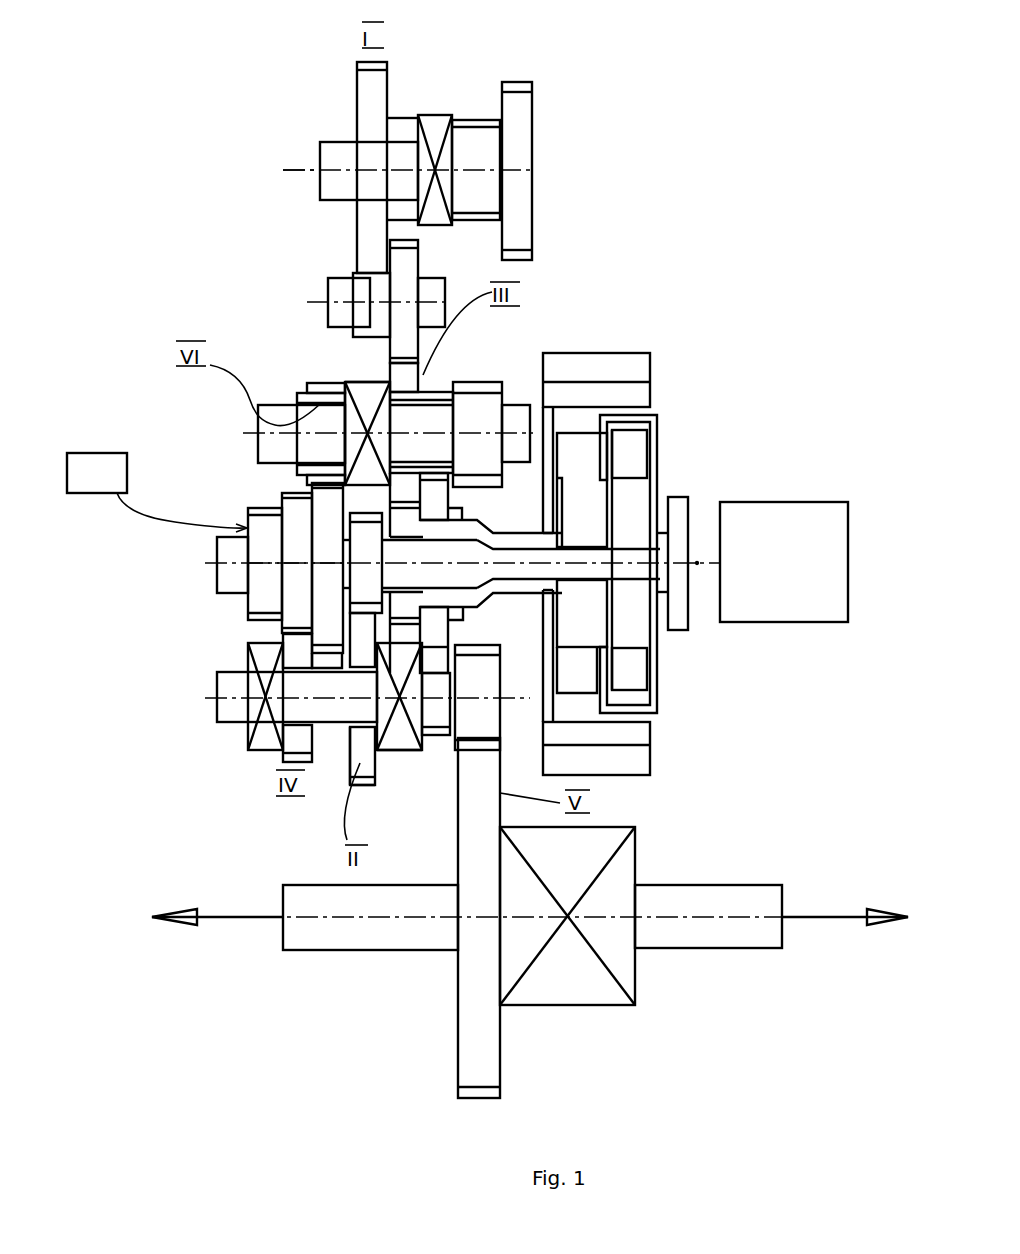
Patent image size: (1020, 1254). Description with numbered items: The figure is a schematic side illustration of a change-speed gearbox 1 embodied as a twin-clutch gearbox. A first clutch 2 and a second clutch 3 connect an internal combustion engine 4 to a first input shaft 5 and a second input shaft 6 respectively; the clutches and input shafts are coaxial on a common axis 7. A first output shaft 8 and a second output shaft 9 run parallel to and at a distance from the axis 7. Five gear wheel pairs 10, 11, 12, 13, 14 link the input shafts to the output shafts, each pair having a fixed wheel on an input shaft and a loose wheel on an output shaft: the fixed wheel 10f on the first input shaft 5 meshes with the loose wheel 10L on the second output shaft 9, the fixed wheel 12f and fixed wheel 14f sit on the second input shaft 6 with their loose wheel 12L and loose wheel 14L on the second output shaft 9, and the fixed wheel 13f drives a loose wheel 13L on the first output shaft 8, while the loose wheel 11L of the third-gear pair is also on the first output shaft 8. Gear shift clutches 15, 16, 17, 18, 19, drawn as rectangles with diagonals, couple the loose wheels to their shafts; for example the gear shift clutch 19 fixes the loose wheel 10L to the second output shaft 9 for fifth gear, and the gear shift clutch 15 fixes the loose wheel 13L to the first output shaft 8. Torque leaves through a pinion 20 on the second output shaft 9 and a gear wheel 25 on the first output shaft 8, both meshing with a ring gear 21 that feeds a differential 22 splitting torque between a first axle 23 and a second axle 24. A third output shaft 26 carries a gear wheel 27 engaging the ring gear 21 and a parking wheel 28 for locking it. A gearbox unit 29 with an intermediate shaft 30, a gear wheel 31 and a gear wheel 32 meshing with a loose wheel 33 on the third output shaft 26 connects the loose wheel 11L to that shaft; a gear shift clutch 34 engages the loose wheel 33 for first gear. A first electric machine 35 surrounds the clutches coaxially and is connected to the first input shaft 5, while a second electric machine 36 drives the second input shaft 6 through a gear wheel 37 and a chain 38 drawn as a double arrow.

The change-speed gearbox 1 is at (130, 218).
The first clutch 2 is at (577, 448).
The second clutch 3 is at (637, 672).
The internal combustion engine 4 is at (786, 578).
The first input shaft 5 is at (490, 523).
The second input shaft 6 is at (223, 583).
The common axis 7 is at (207, 563).
The first output shaft 8 is at (273, 407).
The second output shaft 9 is at (223, 713).
The gear wheel pair 10 is at (450, 638).
The fixed wheel 10f is at (447, 515).
The loose wheel 10L is at (437, 753).
The gear wheel pair 11 is at (392, 508).
The loose wheel 11L is at (427, 378).
The gear wheel pair 12 is at (347, 787).
The fixed wheel 12f is at (376, 560).
The loose wheel 12L is at (367, 763).
The gear wheel pair 13 is at (303, 385).
The loose wheel 13L is at (328, 382).
The fixed wheel 13f is at (338, 557).
The gear wheel pair 14 is at (282, 510).
The fixed wheel 14f is at (285, 528).
The loose wheel 14L is at (283, 763).
The gear shift clutch 15 is at (352, 382).
The gear shift clutch 16 is at (373, 382).
The gear shift clutch 17 is at (248, 652).
The gear shift clutch 18 is at (387, 750).
The gear shift clutch 19 is at (410, 750).
The pinion 20 is at (489, 688).
The ring gear 21 is at (457, 953).
The differential 22 is at (580, 1007).
The first axle 23 is at (283, 950).
The second axle 24 is at (782, 950).
The gear wheel 25 is at (490, 430).
The third output shaft 26 is at (330, 147).
The gear wheel 27 is at (488, 163).
The parking wheel 28 is at (513, 82).
The gearbox unit 29 is at (318, 226).
The intermediate shaft 30 is at (337, 292).
The gear wheel 31 is at (414, 281).
The gear wheel 32 is at (333, 315).
The loose wheel 33 is at (389, 100).
The gear shift clutch 34 is at (435, 114).
The first electric machine 35 is at (620, 352).
The second electric machine 36 is at (108, 486).
The gear wheel 37 is at (247, 520).
The chain 38 is at (138, 513).